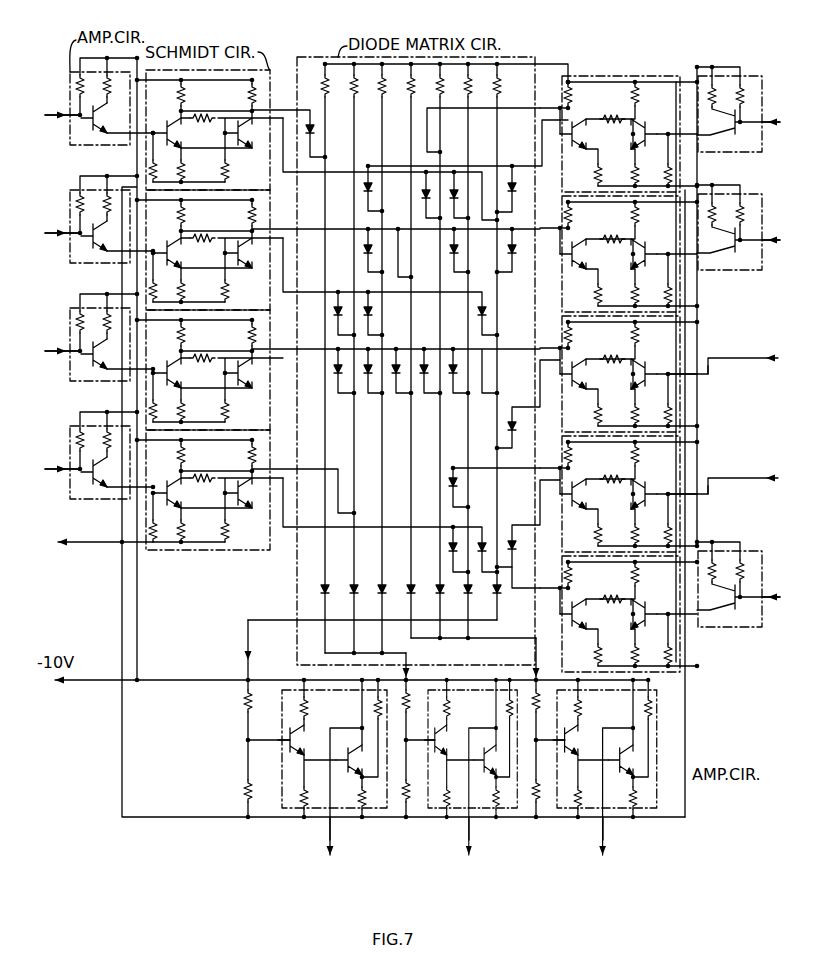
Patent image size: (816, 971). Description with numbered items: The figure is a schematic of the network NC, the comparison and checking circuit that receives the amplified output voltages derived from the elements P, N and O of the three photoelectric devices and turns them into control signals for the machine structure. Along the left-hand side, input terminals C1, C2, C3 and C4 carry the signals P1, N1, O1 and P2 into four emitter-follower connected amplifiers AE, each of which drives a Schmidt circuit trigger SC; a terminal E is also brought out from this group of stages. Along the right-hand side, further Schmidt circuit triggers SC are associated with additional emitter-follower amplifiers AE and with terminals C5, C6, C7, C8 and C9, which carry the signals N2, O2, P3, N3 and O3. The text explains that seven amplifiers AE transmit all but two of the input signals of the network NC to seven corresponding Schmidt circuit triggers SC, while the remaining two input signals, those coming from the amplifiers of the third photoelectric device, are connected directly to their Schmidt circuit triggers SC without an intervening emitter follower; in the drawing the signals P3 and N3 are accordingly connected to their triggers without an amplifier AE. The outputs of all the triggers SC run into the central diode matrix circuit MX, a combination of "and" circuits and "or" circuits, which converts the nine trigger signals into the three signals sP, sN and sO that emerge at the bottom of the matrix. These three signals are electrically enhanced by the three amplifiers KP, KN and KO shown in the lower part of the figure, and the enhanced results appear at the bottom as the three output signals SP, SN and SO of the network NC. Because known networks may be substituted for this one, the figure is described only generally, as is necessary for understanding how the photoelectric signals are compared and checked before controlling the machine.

The emitter-follower connected amplifier AE is at (70, 87).
The Schmidt circuit trigger SC is at (293, 92).
The diode matrix circuit MX is at (540, 57).
The network NC is at (758, 58).
The amplifier KO is at (293, 808).
The amplifier KP is at (456, 808).
The amplifier KN is at (552, 810).
The signal sO is at (260, 661).
The signal sP is at (418, 674).
The signal sN is at (548, 677).
The output signal SO is at (329, 849).
The output signal SP is at (458, 850).
The output signal SN is at (590, 851).
The terminal E is at (98, 533).
The input terminal C1 is at (47, 103).
The input signal P1 is at (57, 128).
The input terminal C2 is at (47, 221).
The input signal N1 is at (57, 245).
The input terminal C3 is at (47, 338).
The input signal O1 is at (57, 363).
The input terminal C4 is at (47, 458).
The input signal P2 is at (57, 482).
The output signal N2 is at (778, 114).
The output terminal C5 is at (783, 135).
The output signal O2 is at (776, 230).
The output terminal C6 is at (777, 253).
The output signal P3 is at (723, 355).
The output terminal C7 is at (726, 371).
The output signal N3 is at (723, 475).
The output terminal C8 is at (727, 490).
The output signal O3 is at (777, 587).
The output terminal C9 is at (782, 607).